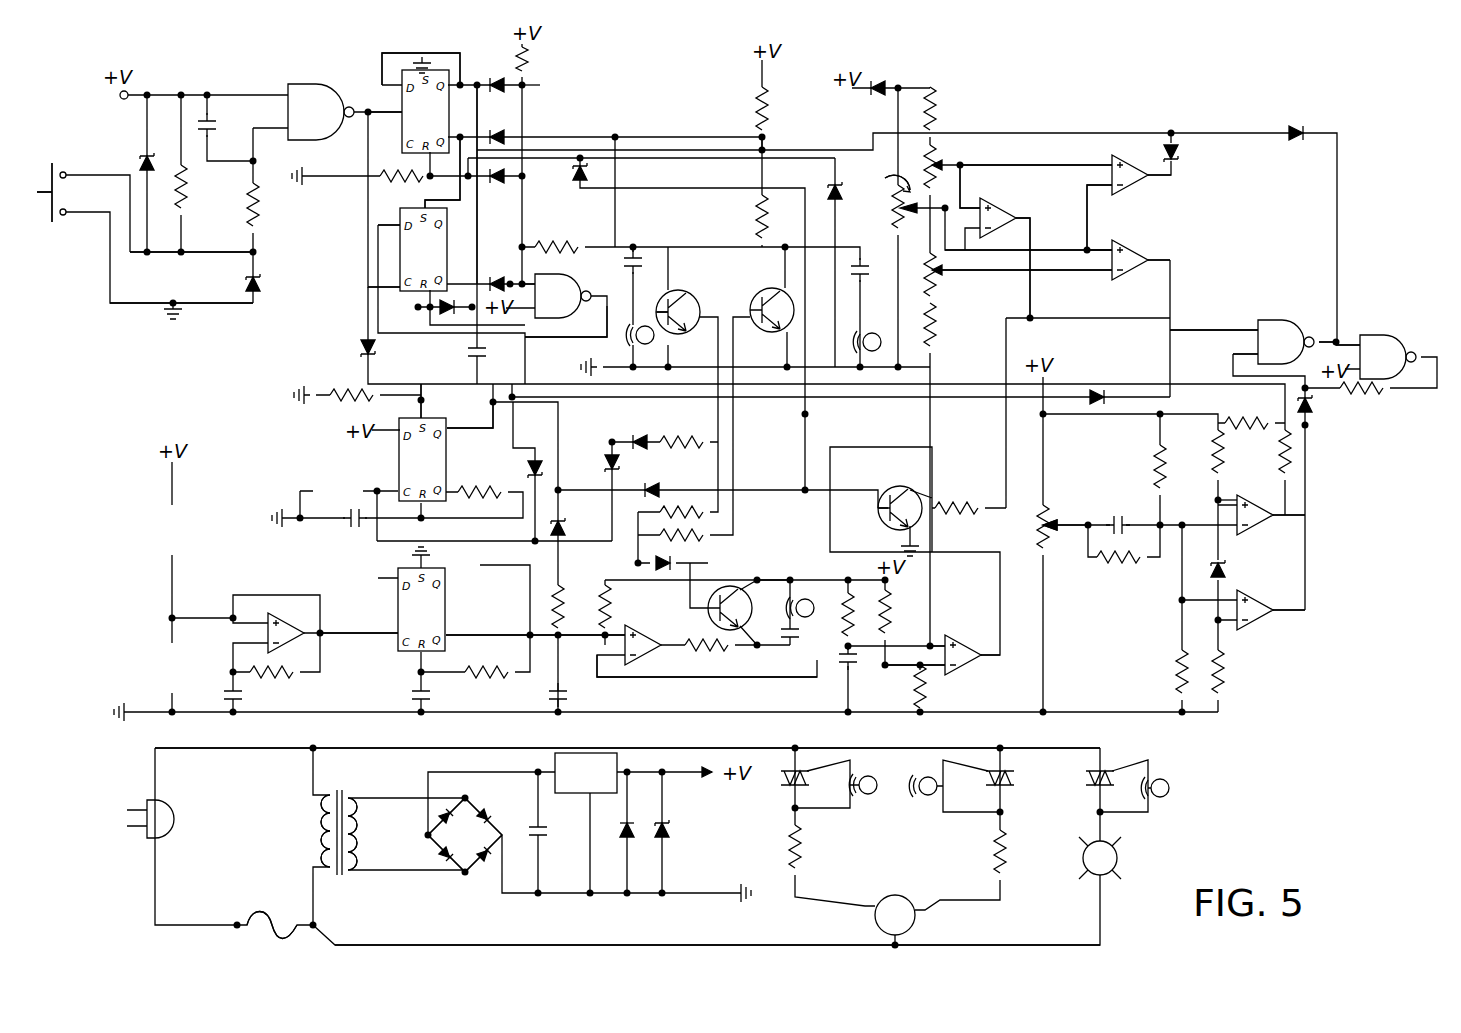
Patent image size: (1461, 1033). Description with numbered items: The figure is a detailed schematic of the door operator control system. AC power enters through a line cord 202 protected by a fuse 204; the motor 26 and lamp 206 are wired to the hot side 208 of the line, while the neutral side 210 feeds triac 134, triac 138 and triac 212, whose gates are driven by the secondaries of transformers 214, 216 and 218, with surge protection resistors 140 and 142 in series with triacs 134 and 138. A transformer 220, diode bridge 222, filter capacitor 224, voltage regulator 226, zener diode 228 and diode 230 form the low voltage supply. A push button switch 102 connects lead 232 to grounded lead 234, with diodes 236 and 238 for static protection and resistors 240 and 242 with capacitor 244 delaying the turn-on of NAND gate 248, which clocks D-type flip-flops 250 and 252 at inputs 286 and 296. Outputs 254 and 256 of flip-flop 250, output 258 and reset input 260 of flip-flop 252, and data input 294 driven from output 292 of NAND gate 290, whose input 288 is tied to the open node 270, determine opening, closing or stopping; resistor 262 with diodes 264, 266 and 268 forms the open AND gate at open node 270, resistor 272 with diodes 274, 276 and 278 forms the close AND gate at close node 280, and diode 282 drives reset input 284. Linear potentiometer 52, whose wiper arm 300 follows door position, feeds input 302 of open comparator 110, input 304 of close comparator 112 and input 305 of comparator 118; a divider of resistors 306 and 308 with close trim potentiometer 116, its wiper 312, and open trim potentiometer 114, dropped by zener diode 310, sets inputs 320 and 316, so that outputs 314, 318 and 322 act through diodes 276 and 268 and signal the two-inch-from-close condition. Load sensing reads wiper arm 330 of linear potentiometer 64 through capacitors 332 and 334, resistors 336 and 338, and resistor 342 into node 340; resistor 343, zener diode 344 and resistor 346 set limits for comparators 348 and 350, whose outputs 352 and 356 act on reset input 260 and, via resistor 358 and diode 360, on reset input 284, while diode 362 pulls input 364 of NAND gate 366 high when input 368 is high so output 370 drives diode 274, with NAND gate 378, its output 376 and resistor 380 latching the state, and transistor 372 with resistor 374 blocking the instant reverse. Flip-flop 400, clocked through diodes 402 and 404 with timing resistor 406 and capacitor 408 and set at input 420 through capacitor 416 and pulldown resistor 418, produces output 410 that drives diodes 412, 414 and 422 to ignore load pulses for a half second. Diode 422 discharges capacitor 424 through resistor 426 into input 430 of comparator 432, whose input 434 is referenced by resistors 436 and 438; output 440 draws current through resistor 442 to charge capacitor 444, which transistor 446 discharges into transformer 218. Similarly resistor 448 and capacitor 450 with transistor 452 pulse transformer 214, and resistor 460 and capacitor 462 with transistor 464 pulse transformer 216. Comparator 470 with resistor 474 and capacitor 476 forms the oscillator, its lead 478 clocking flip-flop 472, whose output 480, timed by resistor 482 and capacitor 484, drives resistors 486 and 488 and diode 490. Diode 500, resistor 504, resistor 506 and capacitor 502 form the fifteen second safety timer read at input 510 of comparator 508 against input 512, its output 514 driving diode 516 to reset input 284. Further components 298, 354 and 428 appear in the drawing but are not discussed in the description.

The switch 102 is at (68, 215).
The diode 236 is at (123, 161).
The resistor 240 is at (207, 186).
The resistor 242 is at (279, 204).
The capacitor 244 is at (234, 116).
The conductor 232 is at (191, 266).
The ground conductor 234 is at (186, 322).
The diode 238 is at (282, 294).
The NAND gate 248 is at (321, 112).
The conductor 286 is at (363, 86).
The flip-flop 250 is at (425, 111).
The conductor 254 is at (421, 57).
The resistor 284 is at (372, 163).
The conductor 298 is at (391, 172).
The conductor 294 is at (361, 216).
The conductor 296 is at (361, 264).
The flip-flop 252 is at (423, 249).
The diode 260 is at (382, 315).
The diode 266 is at (495, 70).
The resistor 262 is at (546, 62).
The conductor 270 is at (563, 81).
The conductor 256 is at (503, 130).
The diode 278 is at (532, 125).
The zener diode 360 is at (561, 173).
The diode 282 is at (503, 196).
The conductor 258 is at (502, 230).
The diode 264 is at (503, 265).
The conductor 288 is at (553, 265).
The NAND gate 290 is at (563, 296).
The conductor 292 is at (566, 332).
The resistor 448 is at (570, 225).
The capacitor 450 is at (659, 244).
The transistor 452 is at (698, 292).
The transistor 464 is at (749, 304).
The resistor 460 is at (739, 214).
The resistor 272 is at (790, 107).
The conductor 280 is at (801, 132).
The optical coupler 214 is at (755, 581).
The optical coupler 216 is at (921, 584).
The optical coupler 218 is at (1015, 698).
The capacitor 462 is at (920, 294).
The resistor 308 is at (957, 328).
The resistor 114 is at (962, 280).
The resistor 116 is at (956, 157).
The resistor 306 is at (962, 108).
The diode 310 is at (909, 70).
The potentiometer knob 300 is at (879, 195).
The potentiometer 52 is at (878, 213).
The zener diode 516 is at (859, 178).
The conductor 312 is at (1036, 149).
The conductor 305 is at (999, 186).
The comparator 118 is at (1020, 208).
The conductor 322 is at (1054, 260).
The conductor 304 is at (1082, 203).
The comparator 112 is at (1114, 158).
The zener diode 276 is at (1202, 153).
The diode 274 is at (1297, 109).
The conductor 314 is at (1189, 191).
The conductor 302 is at (1116, 226).
The comparator 110 is at (1148, 246).
The conductor 318 is at (1189, 249).
The conductor 320 is at (1028, 261).
The conductor 316 is at (1027, 288).
The conductor 368 is at (1214, 307).
The conductor 370 is at (1303, 310).
The conductor 364 is at (1226, 343).
The NAND gate 366 is at (1286, 342).
The conductor 376 is at (1383, 316).
The NAND gate 378 is at (1388, 357).
The resistor 380 is at (1387, 401).
The zener diode 362 is at (1336, 420).
The resistor 358 is at (1250, 408).
The resistor 354 is at (1263, 451).
The resistor 343 is at (1194, 448).
The resistor 336 is at (1138, 460).
The capacitor 334 is at (1130, 501).
The potentiometer wiper 332 is at (1071, 504).
The conductor 340 is at (1202, 511).
The comparator 348 is at (1266, 526).
The conductor 352 is at (1319, 521).
The zener diode 344 is at (1250, 569).
The comparator 350 is at (1274, 623).
The conductor 356 is at (1321, 621).
The potentiometer 64 is at (1024, 526).
The conductor 330 is at (1075, 555).
The resistor 342 is at (1120, 579).
The resistor 338 is at (1154, 671).
The resistor 346 is at (1248, 673).
The diode 268 is at (1088, 377).
The zener diode 412 is at (343, 349).
The capacitor 416 is at (450, 351).
The resistor 418 is at (346, 407).
The conductor 420 is at (455, 401).
The flip-flop 400 is at (422, 459).
The conductor 410 is at (474, 426).
The zener diode 402 is at (540, 444).
The zener diode 404 is at (592, 449).
The resistor 406 is at (485, 474).
The capacitor 408 is at (336, 524).
The diode 500 is at (643, 423).
The resistor 504 is at (691, 423).
The diode 414 is at (680, 472).
The resistor 486 is at (724, 511).
The resistor 488 is at (724, 535).
The diode 490 is at (702, 561).
The zener diode 422 is at (582, 514).
The transistor 372 is at (888, 492).
The resistor 374 is at (963, 489).
The conductor 446 is at (783, 569).
The resistor 506 is at (847, 598).
The resistor 436 is at (911, 608).
The conductor 510 is at (960, 616).
The comparator 508 is at (975, 643).
The conductor 514 is at (1010, 665).
The conductor 512 is at (942, 683).
The resistor 438 is at (947, 703).
The capacitor 502 is at (828, 677).
The resistor 426 is at (545, 604).
The resistor 428 is at (597, 602).
The transistor 440 is at (692, 608).
The conductor 430 is at (577, 643).
The amplifier 432 is at (660, 654).
The resistor 442 is at (720, 661).
The capacitor 444 is at (803, 652).
The conductor 434 is at (707, 677).
The conductor 480 is at (488, 616).
The conductor 478 is at (359, 615).
The resistor 482 is at (481, 654).
The capacitor 484 is at (445, 695).
The capacitor 424 is at (528, 695).
The flip-flop 472 is at (421, 609).
The amplifier 470 is at (249, 633).
The resistor 474 is at (320, 682).
The capacitor 476 is at (259, 695).
The power conductor 210 is at (627, 732).
The plug 202 is at (133, 808).
The transformer 220 is at (360, 815).
The rectifier bridge 222 is at (465, 835).
The capacitor 224 is at (563, 820).
The voltage regulator 226 is at (586, 773).
The diode 230 is at (655, 807).
The zener diode 228 is at (688, 846).
The fuse 204 is at (259, 936).
The power conductor 208 is at (717, 922).
The triac 134 is at (777, 791).
The triac 138 is at (1024, 790).
The triac 212 is at (1077, 771).
The resistor 140 is at (769, 846).
The resistor 142 is at (1029, 851).
The motor 26 is at (911, 896).
The lamp 206 is at (1134, 854).